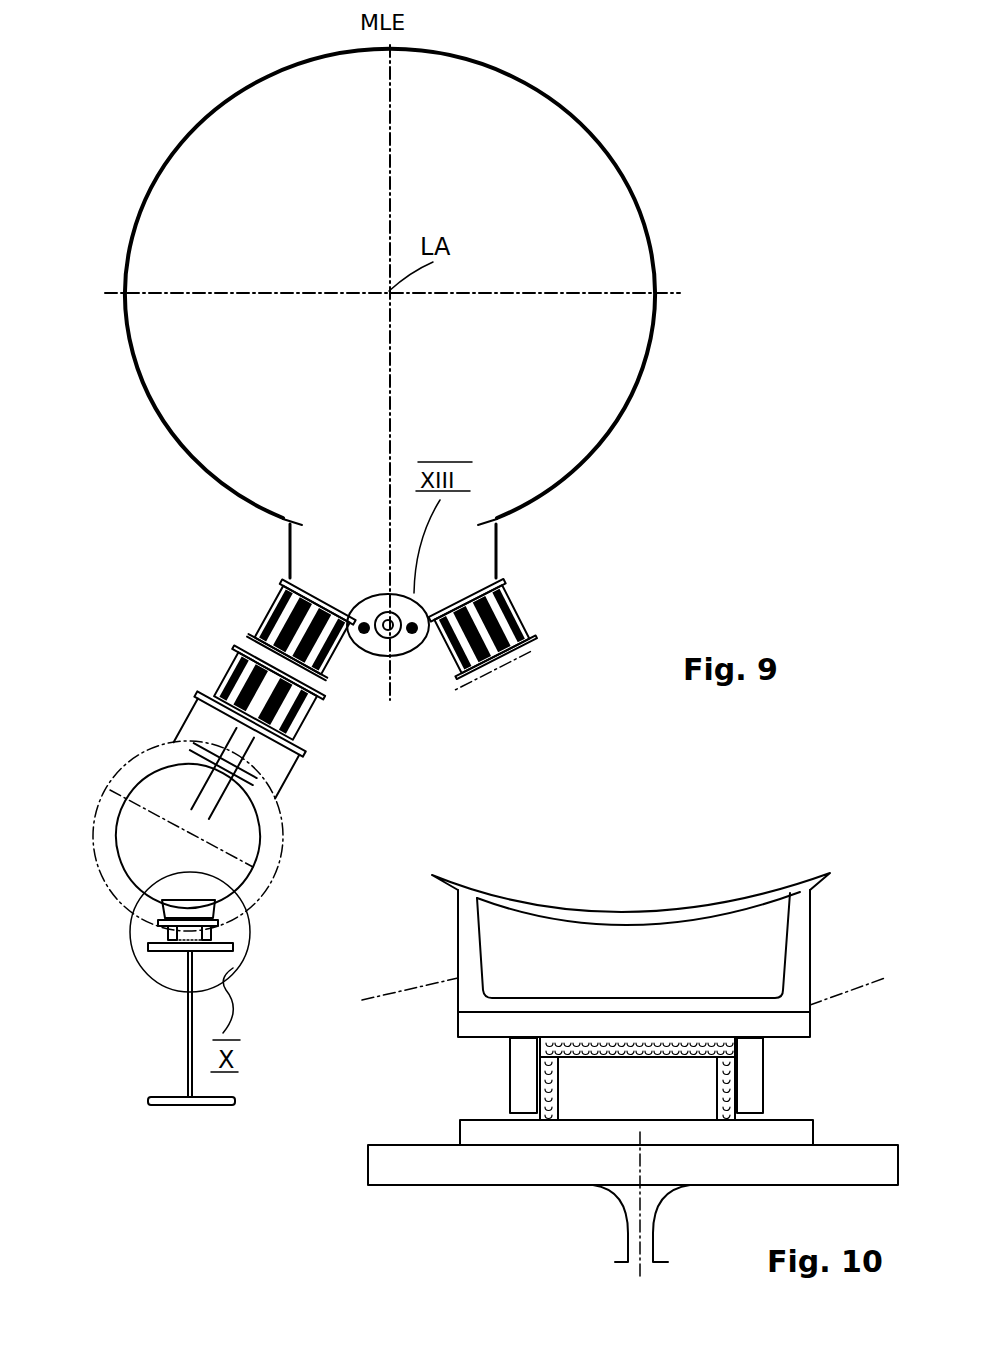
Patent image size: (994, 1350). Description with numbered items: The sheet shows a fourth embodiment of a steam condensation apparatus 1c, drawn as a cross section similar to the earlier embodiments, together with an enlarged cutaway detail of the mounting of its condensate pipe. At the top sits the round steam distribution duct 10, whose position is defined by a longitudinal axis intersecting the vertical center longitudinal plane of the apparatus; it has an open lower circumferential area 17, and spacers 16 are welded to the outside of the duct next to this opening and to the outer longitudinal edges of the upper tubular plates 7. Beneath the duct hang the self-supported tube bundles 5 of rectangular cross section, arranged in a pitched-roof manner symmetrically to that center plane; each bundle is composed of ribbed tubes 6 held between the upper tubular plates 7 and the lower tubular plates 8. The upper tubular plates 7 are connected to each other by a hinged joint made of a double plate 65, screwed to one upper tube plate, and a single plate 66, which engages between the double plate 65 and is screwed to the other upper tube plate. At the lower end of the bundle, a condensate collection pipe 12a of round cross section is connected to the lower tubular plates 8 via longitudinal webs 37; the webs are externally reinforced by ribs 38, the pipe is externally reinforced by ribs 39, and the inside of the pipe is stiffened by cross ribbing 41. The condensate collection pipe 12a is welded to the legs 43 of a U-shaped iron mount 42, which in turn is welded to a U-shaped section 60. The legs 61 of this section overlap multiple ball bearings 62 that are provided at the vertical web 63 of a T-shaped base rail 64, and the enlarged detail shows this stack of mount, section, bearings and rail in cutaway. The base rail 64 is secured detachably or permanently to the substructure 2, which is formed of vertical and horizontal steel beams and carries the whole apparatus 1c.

In FIG. 9, the apparatus for steam condensation 1c is at (690, 377).
In FIG. 9, the steam distribution duct 10 is at (631, 177).
In FIG. 9, the spacers 16 is at (283, 526).
In FIG. 9, the open lower circumferential area 17 is at (367, 536).
In FIG. 9, the tube bundles 5 is at (265, 628).
In FIG. 9, the ribbed tubes 6 is at (287, 618).
In FIG. 9, the upper tubular plates 7 is at (335, 592).
In FIG. 9, the lower tubular plates 8 is at (240, 690).
In FIG. 9, the longitudinal webs 37 is at (192, 718).
In FIG. 9, the ribs 38 is at (200, 723).
In FIG. 9, the ribs 39 is at (125, 776).
In FIG. 9, the cross ribbing 41 is at (222, 787).
In FIG. 9, the condensate collection pipes 12a is at (270, 867).
In FIG. 10, the condensate collection pipes 12a is at (664, 905).
In FIG. 9, the legs 43 is at (160, 910).
In FIG. 10, the legs 43 is at (458, 935).
In FIG. 9, the U-shaped iron mounts 42 is at (140, 924).
In FIG. 10, the U-shaped iron mounts 42 is at (455, 987).
In FIG. 9, the U-shaped sections 60 is at (155, 940).
In FIG. 10, the U-shaped sections 60 is at (777, 1041).
In FIG. 10, the legs 61 is at (523, 1072).
In FIG. 10, the ball bearings 62 is at (588, 1040).
In FIG. 10, the vertical webs 63 is at (650, 1085).
In FIG. 9, the base rails 64 is at (176, 955).
In FIG. 10, the base rails 64 is at (587, 1125).
In FIG. 9, the double plate 65 is at (378, 640).
In FIG. 9, the single plate 66 is at (407, 640).
In FIG. 9, the substructure 2 is at (171, 1115).
In FIG. 10, the substructure 2 is at (423, 1186).